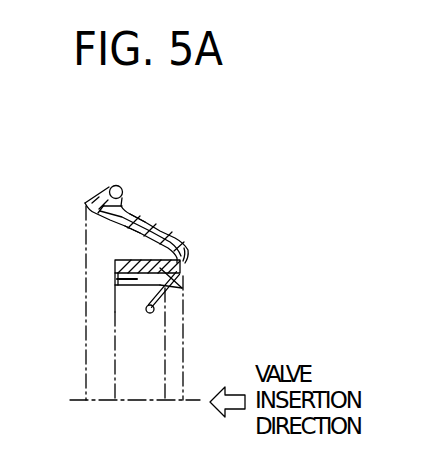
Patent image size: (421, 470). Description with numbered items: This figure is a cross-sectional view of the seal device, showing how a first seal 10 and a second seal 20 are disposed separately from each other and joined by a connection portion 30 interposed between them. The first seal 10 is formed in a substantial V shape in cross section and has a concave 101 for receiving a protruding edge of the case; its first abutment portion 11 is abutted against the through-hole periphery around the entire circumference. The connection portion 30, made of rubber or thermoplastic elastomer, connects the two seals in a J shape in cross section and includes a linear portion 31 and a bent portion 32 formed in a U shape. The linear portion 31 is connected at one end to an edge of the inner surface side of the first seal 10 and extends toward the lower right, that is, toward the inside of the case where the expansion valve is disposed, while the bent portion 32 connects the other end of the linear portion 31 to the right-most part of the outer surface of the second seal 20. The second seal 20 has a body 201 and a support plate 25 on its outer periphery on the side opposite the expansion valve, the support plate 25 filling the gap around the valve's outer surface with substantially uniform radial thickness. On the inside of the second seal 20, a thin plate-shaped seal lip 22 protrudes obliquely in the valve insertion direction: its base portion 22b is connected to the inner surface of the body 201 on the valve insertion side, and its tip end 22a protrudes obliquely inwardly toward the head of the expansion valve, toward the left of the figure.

The first seal 10 is at (138, 191).
The concave 101 is at (123, 199).
The first abutment portion 11 is at (136, 217).
The linear portion 31 is at (157, 219).
The connection portion 30 is at (141, 191).
The bent portion 32 is at (192, 249).
The support plate 25 is at (128, 258).
The second seal 20 is at (164, 300).
The body 201 is at (115, 283).
The seal lip 22 is at (164, 306).
The tip end 22a is at (146, 312).
The base portion 22b is at (167, 283).